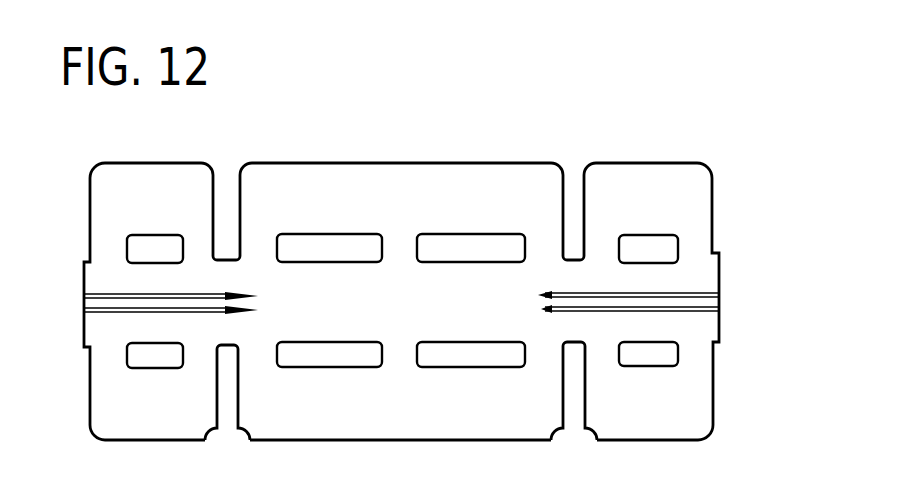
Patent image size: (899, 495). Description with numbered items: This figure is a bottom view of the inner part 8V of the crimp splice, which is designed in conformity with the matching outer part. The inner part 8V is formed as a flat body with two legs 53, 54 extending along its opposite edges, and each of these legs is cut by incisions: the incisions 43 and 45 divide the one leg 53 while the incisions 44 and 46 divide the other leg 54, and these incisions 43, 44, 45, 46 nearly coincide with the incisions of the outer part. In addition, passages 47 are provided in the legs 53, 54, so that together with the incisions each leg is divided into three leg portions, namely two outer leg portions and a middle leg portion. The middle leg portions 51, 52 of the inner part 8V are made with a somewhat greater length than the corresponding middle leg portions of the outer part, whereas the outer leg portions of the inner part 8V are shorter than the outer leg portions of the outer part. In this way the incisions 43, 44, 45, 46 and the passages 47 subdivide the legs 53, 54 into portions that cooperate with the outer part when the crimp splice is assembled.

The inner part 8V is at (126, 421).
The incision 43 is at (227, 398).
The incision 44 is at (575, 400).
The incision 45 is at (227, 181).
The incision 46 is at (572, 195).
The passages 47 is at (282, 352).
The middle leg portion 51 is at (363, 413).
The middle leg portion 52 is at (355, 183).
The leg 53 is at (633, 447).
The leg 54 is at (643, 151).